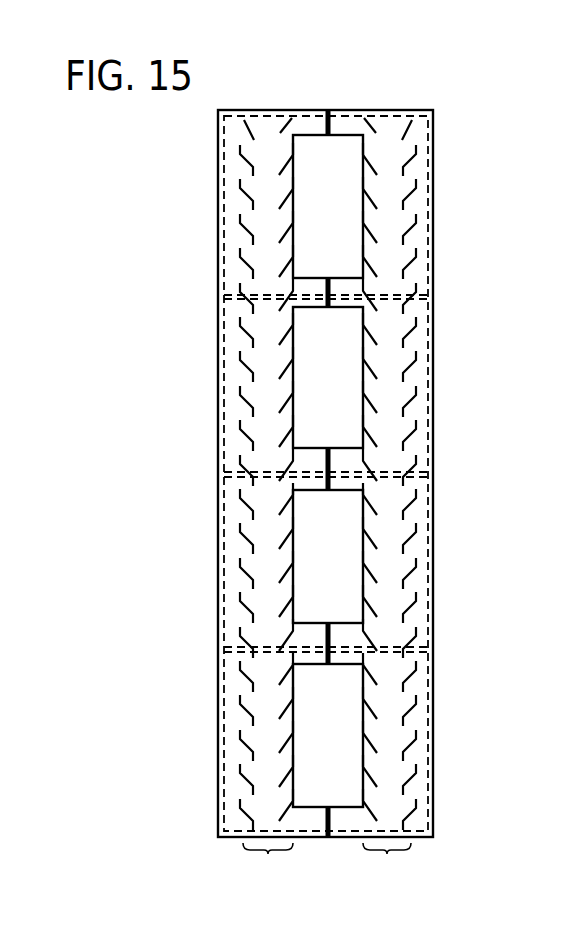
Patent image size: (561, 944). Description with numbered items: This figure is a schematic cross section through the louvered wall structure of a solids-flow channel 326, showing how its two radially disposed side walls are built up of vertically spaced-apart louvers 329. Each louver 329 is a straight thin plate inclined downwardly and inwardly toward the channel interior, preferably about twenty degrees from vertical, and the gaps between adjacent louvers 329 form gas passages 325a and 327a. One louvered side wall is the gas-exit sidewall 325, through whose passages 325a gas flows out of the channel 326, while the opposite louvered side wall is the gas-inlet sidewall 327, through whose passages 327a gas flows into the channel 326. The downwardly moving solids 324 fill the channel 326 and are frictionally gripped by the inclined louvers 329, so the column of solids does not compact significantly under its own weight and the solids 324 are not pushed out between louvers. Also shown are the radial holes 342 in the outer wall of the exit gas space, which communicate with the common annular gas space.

The solids 324 is at (267, 390).
The gas-exit sidewall 325 is at (292, 104).
The gas passages 325a is at (281, 148).
The solids-flow channel 326 is at (327, 861).
The gas-inlet sidewall 327 is at (234, 106).
The gas passages 327a is at (252, 372).
The louvers 329 is at (245, 500).
The radial holes 342 is at (346, 233).